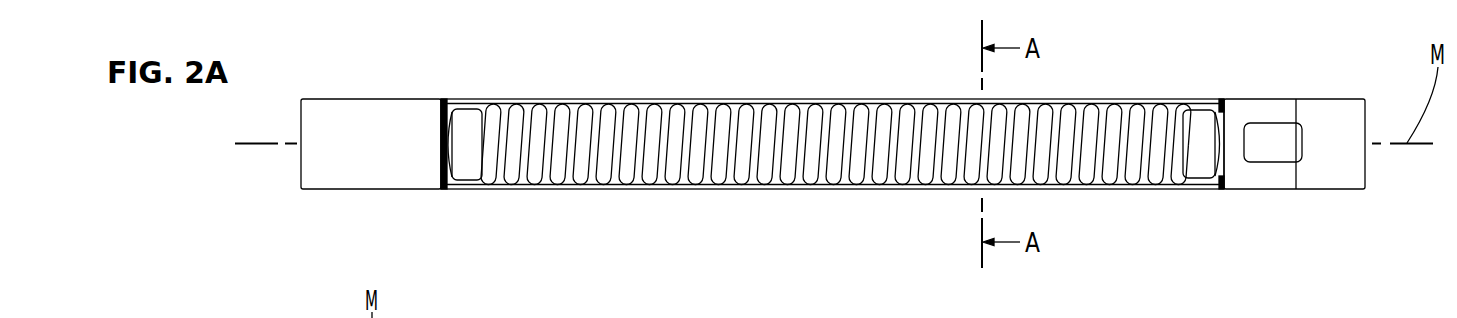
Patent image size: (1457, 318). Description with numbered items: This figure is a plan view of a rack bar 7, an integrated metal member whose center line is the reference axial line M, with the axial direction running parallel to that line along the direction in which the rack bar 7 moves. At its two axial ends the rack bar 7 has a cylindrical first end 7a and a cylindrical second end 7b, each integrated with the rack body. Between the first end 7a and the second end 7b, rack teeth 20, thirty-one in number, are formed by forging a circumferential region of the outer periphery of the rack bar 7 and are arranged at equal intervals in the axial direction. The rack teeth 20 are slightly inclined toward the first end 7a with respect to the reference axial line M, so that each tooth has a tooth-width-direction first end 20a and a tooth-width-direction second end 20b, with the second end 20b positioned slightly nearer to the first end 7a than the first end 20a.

The rack bar 7 is at (839, 152).
The first end 7a is at (1333, 112).
The second end 7b is at (358, 123).
The rack teeth 20 is at (872, 188).
The tooth-width-direction first end 20a is at (1178, 188).
The tooth-width-direction second end 20b is at (1179, 110).